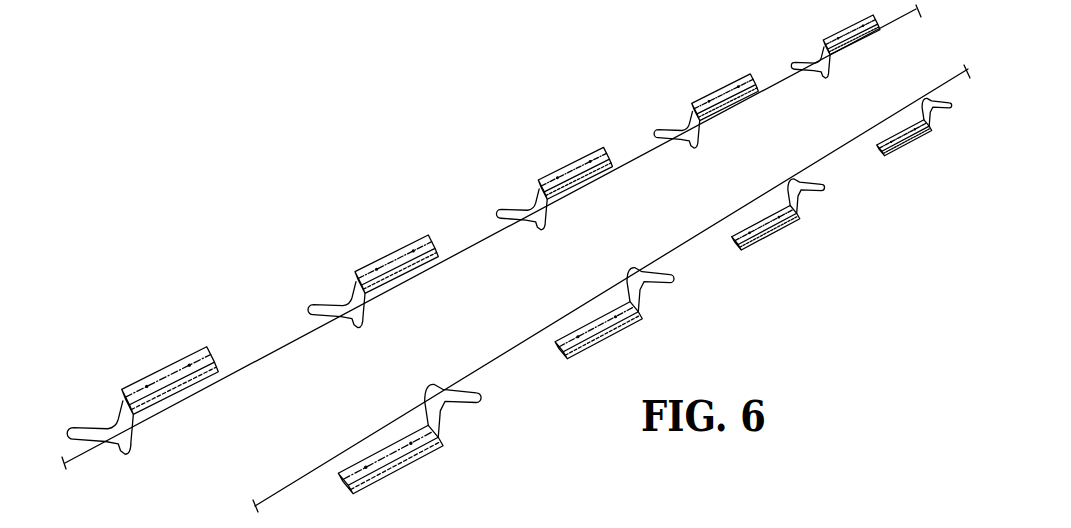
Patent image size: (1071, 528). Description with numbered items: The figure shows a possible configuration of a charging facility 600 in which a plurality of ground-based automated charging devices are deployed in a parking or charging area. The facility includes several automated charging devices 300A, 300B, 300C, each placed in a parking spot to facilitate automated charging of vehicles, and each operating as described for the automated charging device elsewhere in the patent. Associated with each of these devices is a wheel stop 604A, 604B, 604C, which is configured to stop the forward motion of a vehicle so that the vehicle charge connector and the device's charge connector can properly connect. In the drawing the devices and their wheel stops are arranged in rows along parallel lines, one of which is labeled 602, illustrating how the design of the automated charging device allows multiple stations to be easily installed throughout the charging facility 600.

The charging facility 600 is at (430, 98).
The support rail 602 is at (287, 340).
The wheel stop 604A is at (400, 251).
The wheel stop 604B is at (573, 160).
The wheel stop 604C is at (722, 88).
The automated charging device 300A is at (357, 336).
The automated charging device 300B is at (542, 238).
The automated charging device 300C is at (695, 156).